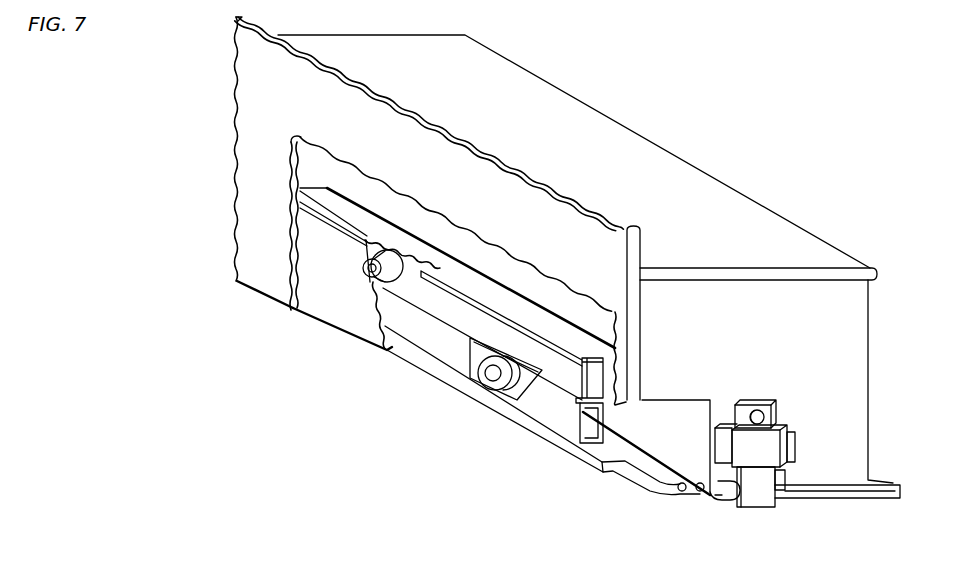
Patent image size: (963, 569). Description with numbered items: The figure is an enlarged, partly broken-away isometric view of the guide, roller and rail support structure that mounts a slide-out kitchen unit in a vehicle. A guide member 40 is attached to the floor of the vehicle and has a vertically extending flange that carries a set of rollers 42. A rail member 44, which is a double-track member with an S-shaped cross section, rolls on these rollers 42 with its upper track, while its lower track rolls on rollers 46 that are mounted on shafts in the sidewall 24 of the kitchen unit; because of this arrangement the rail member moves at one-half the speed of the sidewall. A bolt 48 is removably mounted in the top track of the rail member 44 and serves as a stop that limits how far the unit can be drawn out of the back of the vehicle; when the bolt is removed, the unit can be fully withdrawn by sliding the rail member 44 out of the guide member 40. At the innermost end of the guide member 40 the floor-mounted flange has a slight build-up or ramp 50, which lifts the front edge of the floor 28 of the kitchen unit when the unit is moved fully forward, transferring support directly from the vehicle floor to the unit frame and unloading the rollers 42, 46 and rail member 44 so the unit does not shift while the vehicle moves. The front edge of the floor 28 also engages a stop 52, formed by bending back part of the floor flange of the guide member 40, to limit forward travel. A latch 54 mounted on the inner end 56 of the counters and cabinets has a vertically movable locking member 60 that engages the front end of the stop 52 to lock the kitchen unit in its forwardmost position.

The sidewall 24 is at (257, 102).
The floor 28 is at (702, 491).
The guide member 40 is at (335, 305).
The roller 42 is at (397, 259).
The rail member 44 is at (513, 313).
The roller 46 is at (500, 387).
The bolt 48 is at (570, 397).
The ramp 50 is at (701, 495).
The stop 52 is at (718, 498).
The latch 54 is at (768, 452).
The inner end 56 is at (762, 332).
The locking member 60 is at (758, 400).